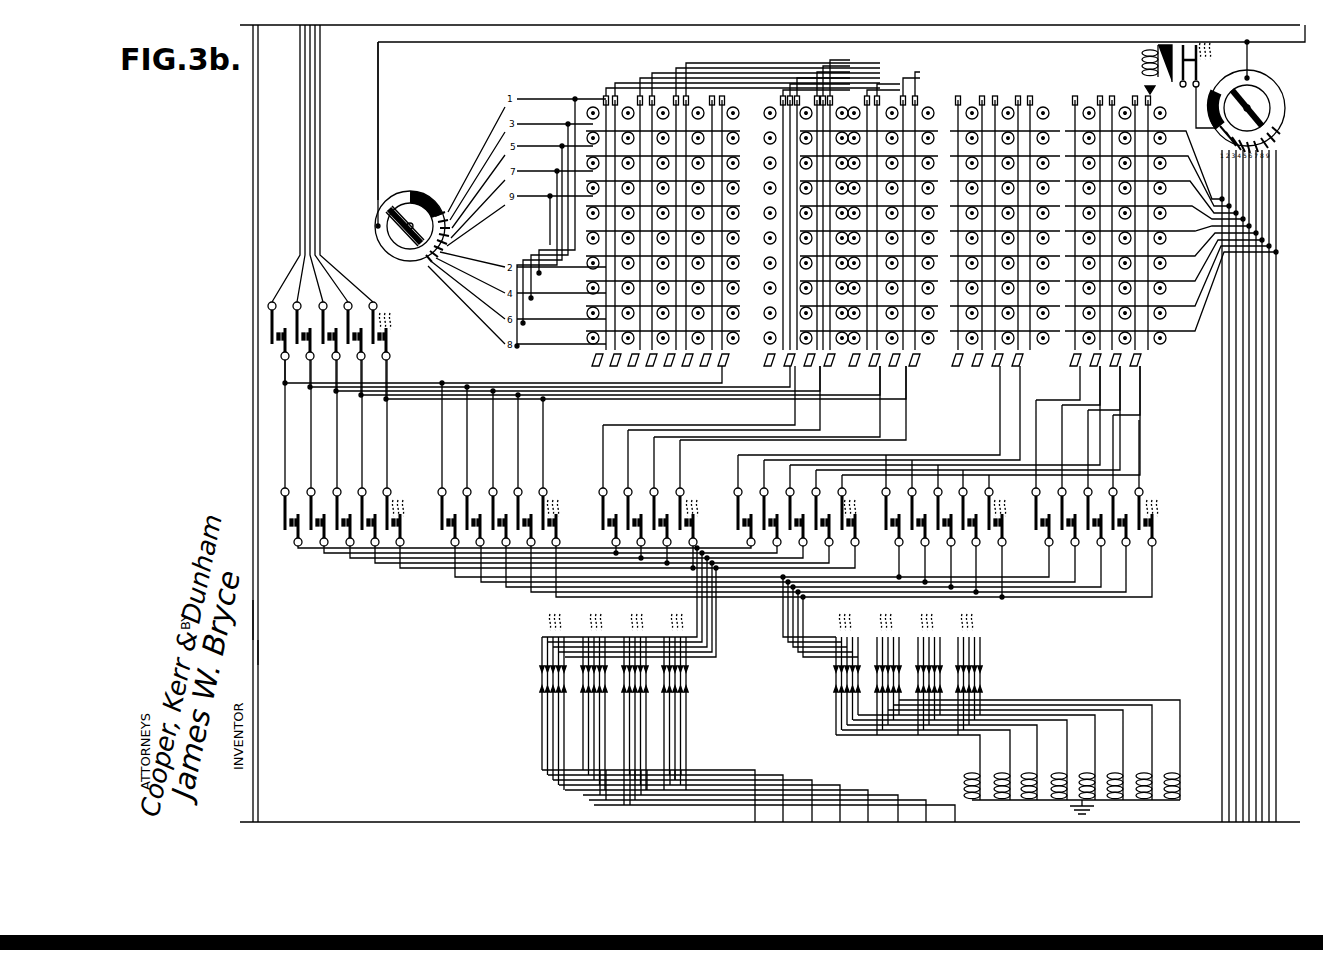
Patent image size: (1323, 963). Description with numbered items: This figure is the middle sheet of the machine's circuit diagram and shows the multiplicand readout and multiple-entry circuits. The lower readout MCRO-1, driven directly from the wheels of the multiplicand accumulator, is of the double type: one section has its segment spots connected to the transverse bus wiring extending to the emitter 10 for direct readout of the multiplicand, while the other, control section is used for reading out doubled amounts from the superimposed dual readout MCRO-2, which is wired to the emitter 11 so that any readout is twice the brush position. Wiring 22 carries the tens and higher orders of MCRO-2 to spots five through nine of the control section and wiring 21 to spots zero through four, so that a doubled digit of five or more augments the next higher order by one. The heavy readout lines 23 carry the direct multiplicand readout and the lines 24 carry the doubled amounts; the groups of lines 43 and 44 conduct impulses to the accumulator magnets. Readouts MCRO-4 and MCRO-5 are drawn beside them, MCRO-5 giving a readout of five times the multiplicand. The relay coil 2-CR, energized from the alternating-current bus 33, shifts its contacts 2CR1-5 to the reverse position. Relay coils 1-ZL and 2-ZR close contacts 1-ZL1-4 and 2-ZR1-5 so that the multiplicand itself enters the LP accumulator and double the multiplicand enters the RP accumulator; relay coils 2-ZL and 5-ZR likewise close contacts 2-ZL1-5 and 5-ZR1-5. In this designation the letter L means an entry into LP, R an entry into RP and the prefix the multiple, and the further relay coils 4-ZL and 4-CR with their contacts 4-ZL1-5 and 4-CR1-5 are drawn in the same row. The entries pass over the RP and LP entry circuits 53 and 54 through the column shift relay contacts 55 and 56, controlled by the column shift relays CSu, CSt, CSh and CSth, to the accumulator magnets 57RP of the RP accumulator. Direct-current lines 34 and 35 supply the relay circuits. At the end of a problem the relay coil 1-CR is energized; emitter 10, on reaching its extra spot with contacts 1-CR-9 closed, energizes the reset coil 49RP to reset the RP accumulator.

The emitter 10 is at (1268, 92).
The emitter 11 is at (388, 255).
The wiring 21 is at (780, 78).
The wiring 22 is at (714, 78).
The readout lines 23 is at (800, 420).
The lines 24 is at (780, 376).
The A. C. bus 33 is at (378, 152).
The D. C. bus 34 is at (256, 628).
The D. C. bus 35 is at (258, 652).
The group of lines 43 is at (414, 396).
The group of lines 44 is at (322, 104).
The RP entry circuit 53 is at (802, 660).
The LP entry circuit 54 is at (698, 655).
The column shift relay contacts 55 is at (985, 680).
The column shift relay contacts 56 is at (688, 688).
The RP accumulator magnets 57RP is at (1100, 803).
The RP reset coil 49RP is at (1140, 60).
The relay coil 1-CR is at (1215, 52).
The relay contacts 1-CR-9 is at (1188, 86).
The relay coil 2-CR is at (395, 322).
The relay contacts 2CR1-5 is at (278, 345).
The relay contacts 2-ZL1-5 is at (300, 488).
The relay coil 2-ZL is at (405, 498).
The relay contacts 2-ZR1-5 is at (455, 488).
The relay coil 2-ZR is at (560, 498).
The relay contacts 1-ZL1-4 is at (610, 488).
The relay coil 1-ZL is at (700, 498).
The relay contacts 4-ZL1-5 is at (835, 488).
The relay coil 4-ZL is at (850, 498).
The relay contacts 4-CR1-5 is at (963, 488).
The relay coil 4-CR is at (1010, 488).
The relay contacts 5-ZR1-5 is at (1042, 488).
The relay coil 5-ZR is at (1160, 486).
The thousands control switch CSth is at (683, 614).
The hundreds control switch CSh is at (734, 614).
The column shift relay CSt is at (778, 614).
The column shift relay magnet CSu is at (827, 614).
The lower readout MCRO-1 is at (851, 203).
The superimposed readout MCRO-2 is at (674, 212).
The matrix crossbar MCRO-4 is at (1004, 214).
The readout MCRO-5 is at (1166, 214).